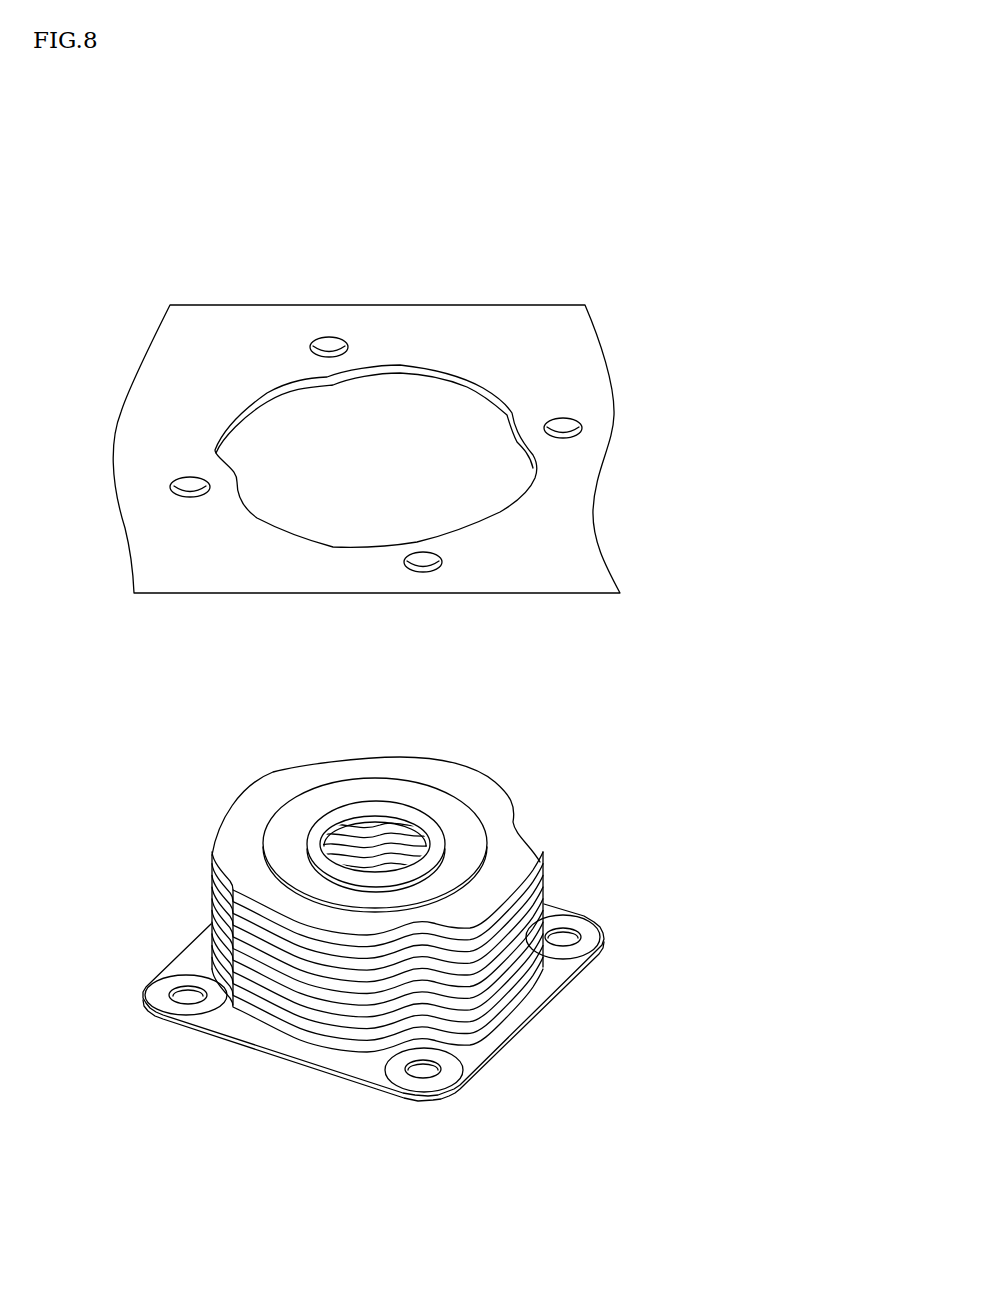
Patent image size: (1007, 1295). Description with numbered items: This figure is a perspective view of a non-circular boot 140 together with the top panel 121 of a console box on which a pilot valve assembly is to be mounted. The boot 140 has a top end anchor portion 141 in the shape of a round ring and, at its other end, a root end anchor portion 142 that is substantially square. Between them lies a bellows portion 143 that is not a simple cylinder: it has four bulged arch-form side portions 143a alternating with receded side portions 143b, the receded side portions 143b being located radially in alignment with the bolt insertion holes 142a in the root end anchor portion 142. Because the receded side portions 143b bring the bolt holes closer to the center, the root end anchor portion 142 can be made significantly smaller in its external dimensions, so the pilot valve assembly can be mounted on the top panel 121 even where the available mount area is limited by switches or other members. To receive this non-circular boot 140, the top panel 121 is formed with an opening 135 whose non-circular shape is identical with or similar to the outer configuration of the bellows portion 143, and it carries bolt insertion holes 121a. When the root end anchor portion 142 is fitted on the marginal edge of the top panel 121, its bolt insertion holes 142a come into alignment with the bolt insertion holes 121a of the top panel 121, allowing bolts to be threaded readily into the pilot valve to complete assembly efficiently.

The top panel 121 is at (201, 323).
The bolt insertion holes 121a is at (330, 340).
The opening 135 is at (415, 380).
The boot 140 is at (405, 730).
The top end anchor portion 141 is at (372, 803).
The root end anchor portion 142 is at (510, 1022).
The bolt insertion holes 142a is at (580, 928).
The bellows portion 143 is at (375, 909).
The bulged arch-form side portions 143a is at (462, 767).
The receded side portions 143b is at (330, 767).